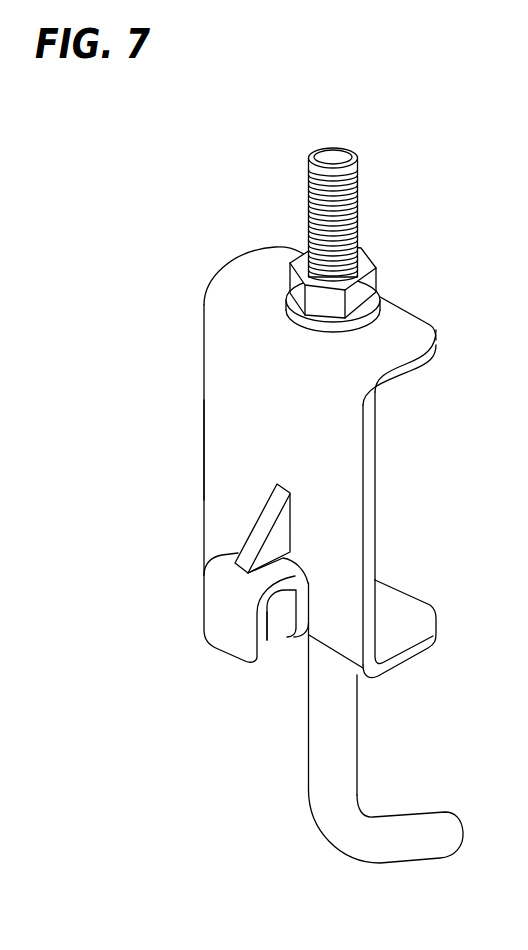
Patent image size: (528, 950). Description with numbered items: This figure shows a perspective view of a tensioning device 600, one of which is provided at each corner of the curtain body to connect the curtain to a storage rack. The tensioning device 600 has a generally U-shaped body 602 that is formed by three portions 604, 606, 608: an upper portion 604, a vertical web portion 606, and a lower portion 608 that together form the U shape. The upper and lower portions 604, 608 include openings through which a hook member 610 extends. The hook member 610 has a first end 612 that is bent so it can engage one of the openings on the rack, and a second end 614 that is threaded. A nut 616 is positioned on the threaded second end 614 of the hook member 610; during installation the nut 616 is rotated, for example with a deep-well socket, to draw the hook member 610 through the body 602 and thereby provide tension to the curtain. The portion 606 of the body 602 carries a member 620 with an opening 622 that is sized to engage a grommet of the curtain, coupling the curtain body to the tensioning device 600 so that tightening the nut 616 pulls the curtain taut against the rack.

The tensioning device 600 is at (413, 155).
The U-shaped body 602 is at (217, 398).
The portion 604 is at (250, 277).
The portion 606 is at (262, 450).
The portion 608 is at (400, 622).
The hook member 610 is at (315, 767).
The first end 612 is at (415, 832).
The second end 614 is at (352, 217).
The nut 616 is at (365, 298).
The member 620 is at (220, 618).
The opening 622 is at (280, 625).